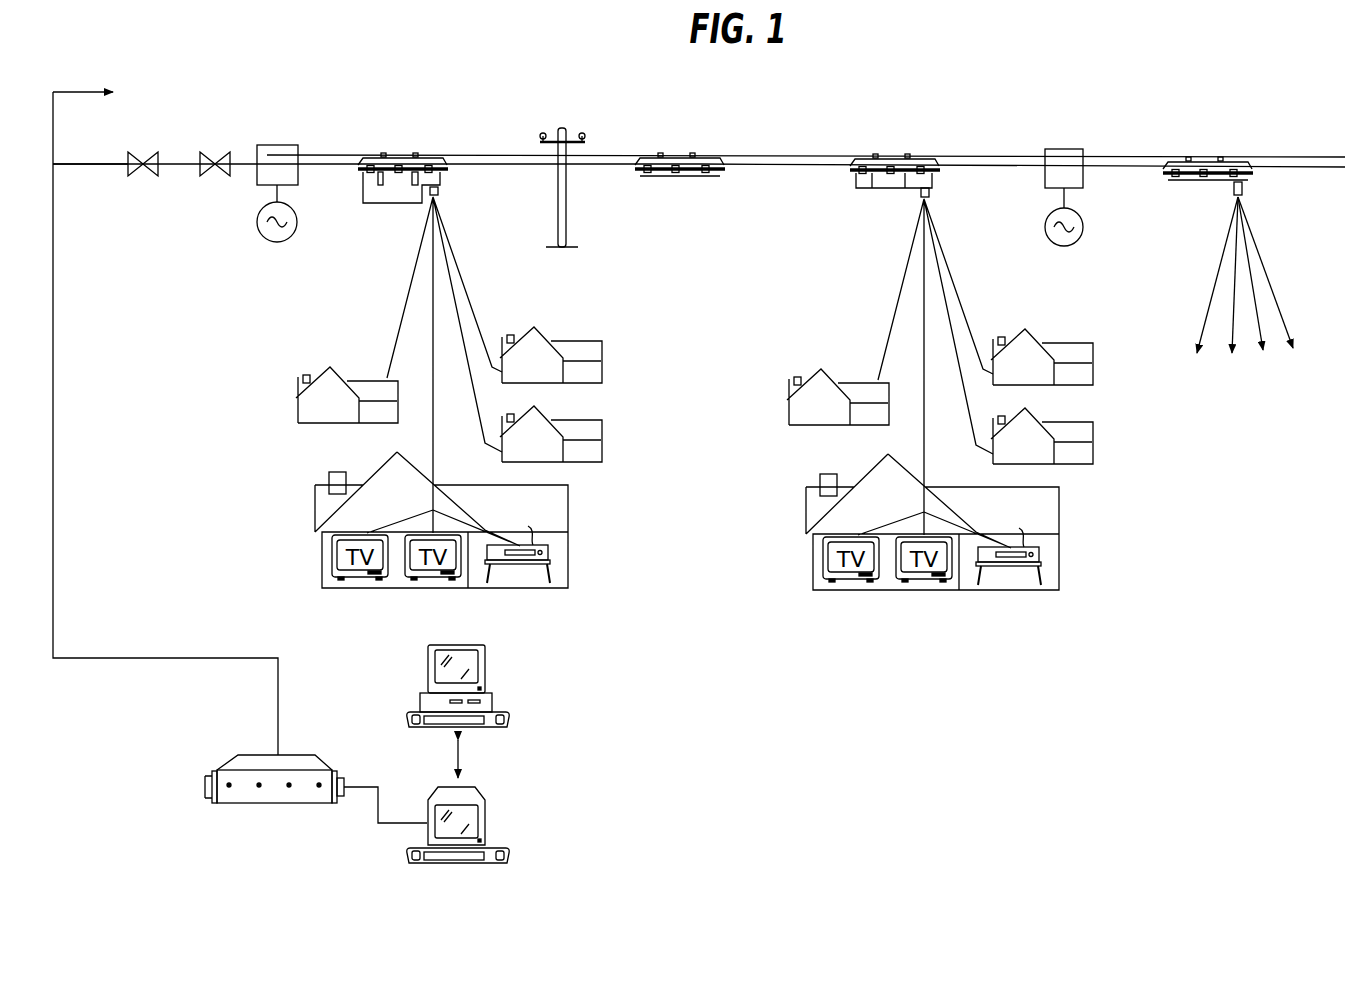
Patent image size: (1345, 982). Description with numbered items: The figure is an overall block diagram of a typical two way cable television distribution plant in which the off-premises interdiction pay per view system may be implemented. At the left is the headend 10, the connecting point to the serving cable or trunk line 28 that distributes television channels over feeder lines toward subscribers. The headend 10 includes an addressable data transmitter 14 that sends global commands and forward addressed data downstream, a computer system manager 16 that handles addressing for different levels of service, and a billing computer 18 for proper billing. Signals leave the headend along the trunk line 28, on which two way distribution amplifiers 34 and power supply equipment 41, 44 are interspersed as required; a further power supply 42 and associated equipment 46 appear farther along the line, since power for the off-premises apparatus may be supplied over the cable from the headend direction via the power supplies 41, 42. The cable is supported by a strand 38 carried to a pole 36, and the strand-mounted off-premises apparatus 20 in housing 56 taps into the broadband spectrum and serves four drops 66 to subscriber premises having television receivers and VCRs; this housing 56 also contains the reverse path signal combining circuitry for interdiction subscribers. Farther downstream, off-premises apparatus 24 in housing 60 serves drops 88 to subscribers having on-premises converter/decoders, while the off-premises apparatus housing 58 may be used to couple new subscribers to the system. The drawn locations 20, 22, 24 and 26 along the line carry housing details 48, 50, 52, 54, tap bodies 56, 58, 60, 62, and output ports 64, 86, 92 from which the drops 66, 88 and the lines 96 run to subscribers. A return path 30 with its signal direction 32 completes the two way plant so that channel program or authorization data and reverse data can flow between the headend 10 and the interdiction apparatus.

The headend 10 is at (387, 754).
The addressable data transmitter 14 is at (283, 805).
The computer system manager 16 is at (487, 820).
The billing computer 18 is at (487, 668).
The off-premises interdiction apparatus 20 is at (421, 175).
The splice 22 is at (679, 163).
The off-premises apparatus 24 is at (918, 172).
The tap 26 is at (1247, 263).
The serving cable or trunk line 28 is at (88, 166).
The return line 30 is at (55, 345).
The signal direction 32 is at (55, 120).
The two way distribution amplifiers 34 is at (214, 152).
The pole 36 is at (560, 128).
The strand 38 is at (783, 156).
The power supply 41 is at (263, 236).
The power supply 42 is at (1081, 238).
The power supply equipment 44 is at (277, 145).
The power inserter 46 is at (1045, 176).
The tap housing 48 is at (427, 157).
The splice housing 50 is at (700, 157).
The tap housing 52 is at (920, 159).
The tap housing 54 is at (1228, 161).
The housing 56 is at (388, 204).
The off-premises apparatus housing 58 is at (666, 178).
The housing 60 is at (885, 189).
The tap connector 62 is at (1215, 181).
The tap output port 64 is at (440, 191).
The drops 66 is at (393, 345).
The tap output port 86 is at (931, 195).
The drops 88 is at (940, 394).
The tap output port 92 is at (1247, 186).
The drop cables to subscribers 96 is at (1247, 197).